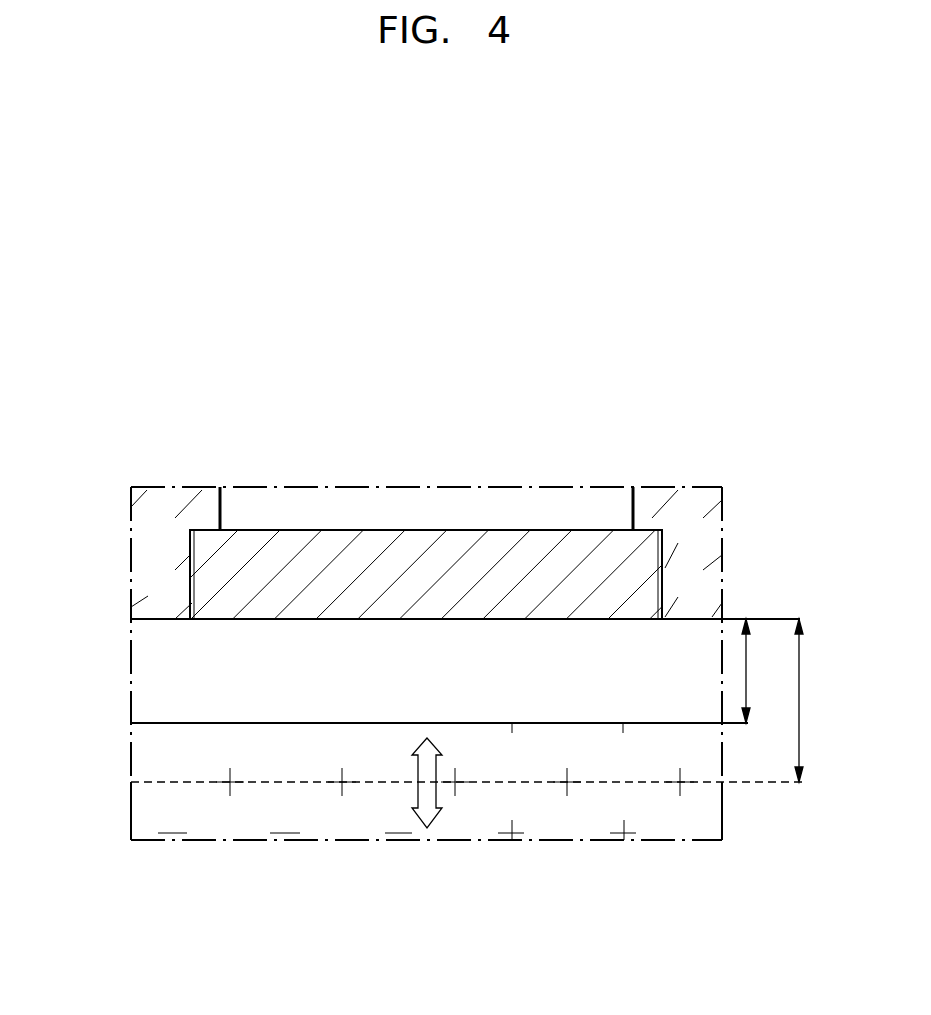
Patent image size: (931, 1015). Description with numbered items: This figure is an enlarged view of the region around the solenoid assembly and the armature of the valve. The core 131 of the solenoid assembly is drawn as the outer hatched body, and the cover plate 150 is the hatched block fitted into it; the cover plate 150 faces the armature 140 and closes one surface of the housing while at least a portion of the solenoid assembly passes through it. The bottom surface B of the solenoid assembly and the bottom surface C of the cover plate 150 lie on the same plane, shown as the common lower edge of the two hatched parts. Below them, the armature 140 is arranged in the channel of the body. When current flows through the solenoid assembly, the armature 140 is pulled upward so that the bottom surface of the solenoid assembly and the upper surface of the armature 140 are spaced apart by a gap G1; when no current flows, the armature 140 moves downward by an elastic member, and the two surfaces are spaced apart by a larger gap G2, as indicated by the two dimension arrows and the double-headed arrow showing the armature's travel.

The core 131 is at (152, 552).
The cover plate 150 is at (436, 555).
The bottom surface of the solenoid assembly B is at (165, 620).
The bottom surface of the cover plate C is at (252, 620).
The armature 140 is at (152, 755).
The gap G1 is at (762, 671).
The gap G2 is at (816, 700).